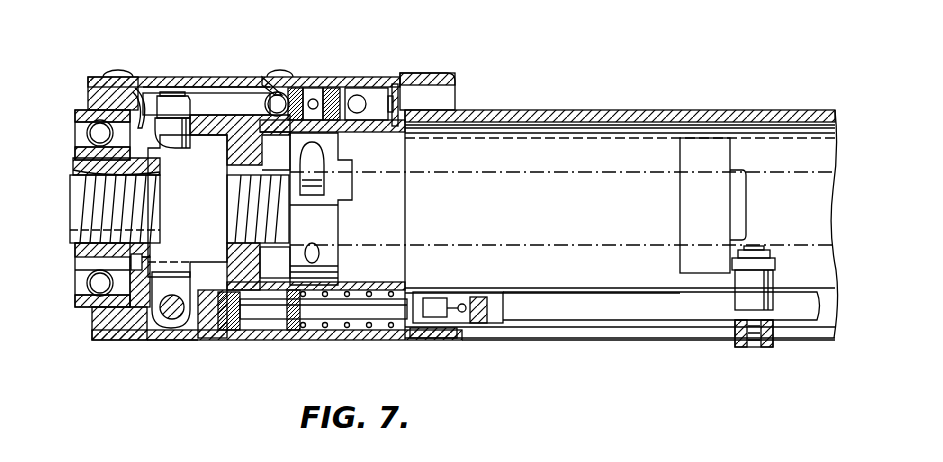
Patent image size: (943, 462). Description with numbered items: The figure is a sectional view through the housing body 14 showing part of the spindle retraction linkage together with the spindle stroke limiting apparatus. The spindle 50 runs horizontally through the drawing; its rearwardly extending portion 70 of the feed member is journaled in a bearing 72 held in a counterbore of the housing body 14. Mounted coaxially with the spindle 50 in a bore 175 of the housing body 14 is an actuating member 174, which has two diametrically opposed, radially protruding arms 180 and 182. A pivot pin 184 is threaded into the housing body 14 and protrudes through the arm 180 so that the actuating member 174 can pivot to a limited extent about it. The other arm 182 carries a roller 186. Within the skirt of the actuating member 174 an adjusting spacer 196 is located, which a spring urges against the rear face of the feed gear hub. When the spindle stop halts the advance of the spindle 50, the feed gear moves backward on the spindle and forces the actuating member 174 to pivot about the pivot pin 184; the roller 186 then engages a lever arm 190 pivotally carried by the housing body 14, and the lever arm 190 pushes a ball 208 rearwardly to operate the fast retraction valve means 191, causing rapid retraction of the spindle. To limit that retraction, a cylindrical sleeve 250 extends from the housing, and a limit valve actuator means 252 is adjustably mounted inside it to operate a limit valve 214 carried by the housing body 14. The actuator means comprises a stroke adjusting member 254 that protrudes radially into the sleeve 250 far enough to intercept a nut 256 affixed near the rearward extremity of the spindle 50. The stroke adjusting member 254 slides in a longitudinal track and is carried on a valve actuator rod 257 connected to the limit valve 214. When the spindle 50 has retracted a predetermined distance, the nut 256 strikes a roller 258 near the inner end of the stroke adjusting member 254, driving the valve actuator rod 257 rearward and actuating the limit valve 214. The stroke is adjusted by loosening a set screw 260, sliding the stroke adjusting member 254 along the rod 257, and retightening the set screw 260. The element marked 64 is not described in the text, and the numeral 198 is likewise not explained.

The housing body 14 is at (98, 77).
The spindle 50 is at (78, 196).
The shaft portion 64 is at (78, 226).
The rearwardly extending portion 70 is at (80, 250).
The bearing 72 is at (90, 124).
The actuating member 174 is at (219, 125).
The bore 175 is at (140, 86).
The arm 180 is at (158, 323).
The arm 182 is at (176, 128).
The pivot pin 184 is at (180, 328).
The roller 186 is at (161, 102).
The lever arm 190 is at (206, 100).
The valve means 191 is at (331, 87).
The adjusting spacer 196 is at (165, 253).
The collar 198 is at (74, 165).
The ball 208 is at (281, 94).
The limit valve 214 is at (293, 328).
The sleeve 250 is at (686, 110).
The limit valve actuator means 252 is at (664, 320).
The stroke adjusting member 254 is at (776, 272).
The nut 256 is at (334, 157).
The valve actuator rod 257 is at (560, 308).
The roller 258 is at (777, 257).
The set screw 260 is at (757, 347).